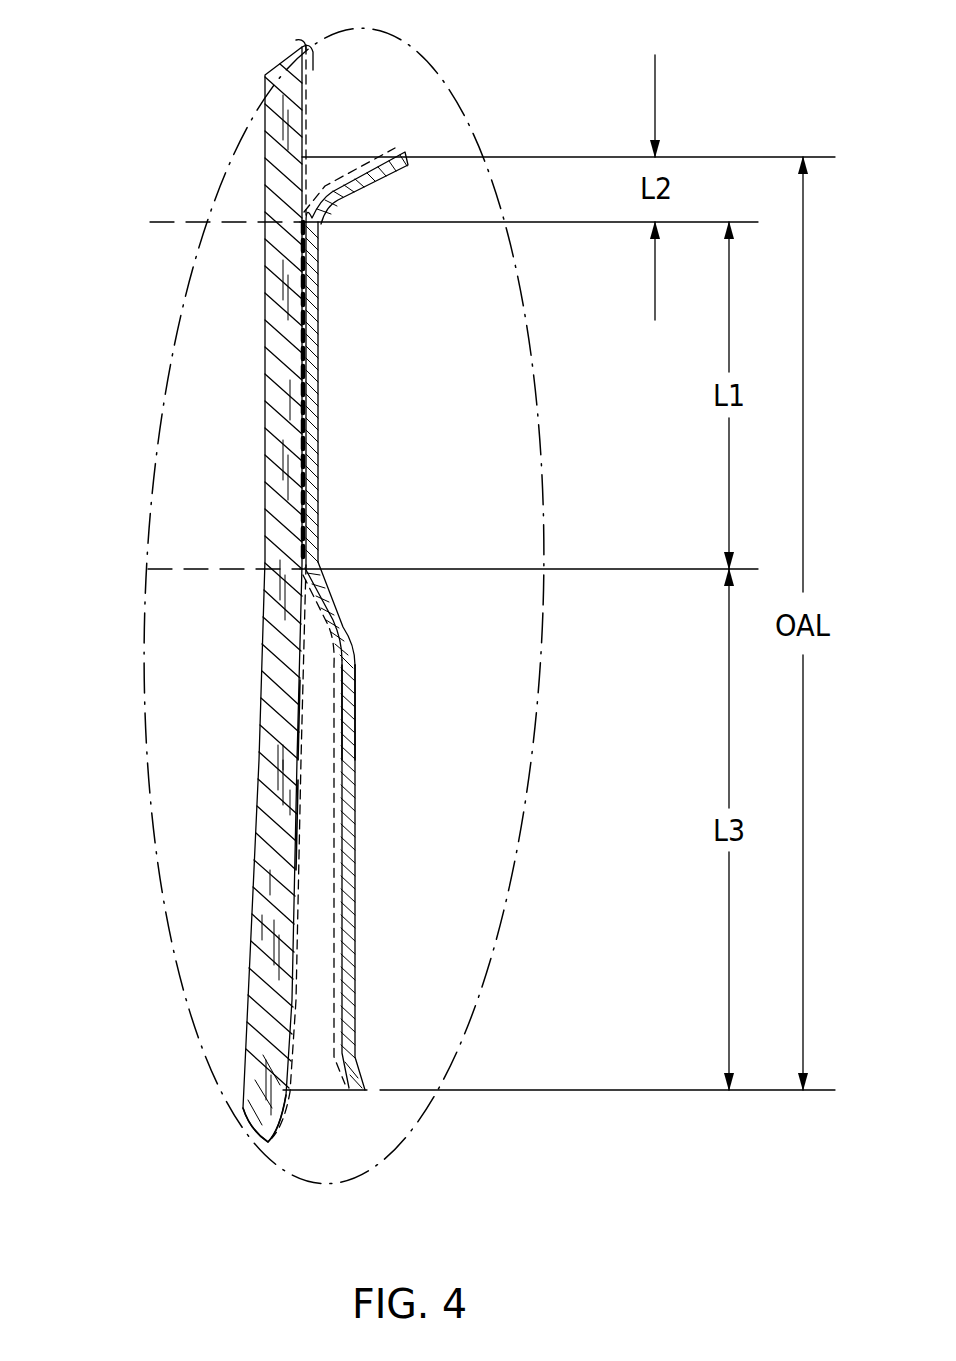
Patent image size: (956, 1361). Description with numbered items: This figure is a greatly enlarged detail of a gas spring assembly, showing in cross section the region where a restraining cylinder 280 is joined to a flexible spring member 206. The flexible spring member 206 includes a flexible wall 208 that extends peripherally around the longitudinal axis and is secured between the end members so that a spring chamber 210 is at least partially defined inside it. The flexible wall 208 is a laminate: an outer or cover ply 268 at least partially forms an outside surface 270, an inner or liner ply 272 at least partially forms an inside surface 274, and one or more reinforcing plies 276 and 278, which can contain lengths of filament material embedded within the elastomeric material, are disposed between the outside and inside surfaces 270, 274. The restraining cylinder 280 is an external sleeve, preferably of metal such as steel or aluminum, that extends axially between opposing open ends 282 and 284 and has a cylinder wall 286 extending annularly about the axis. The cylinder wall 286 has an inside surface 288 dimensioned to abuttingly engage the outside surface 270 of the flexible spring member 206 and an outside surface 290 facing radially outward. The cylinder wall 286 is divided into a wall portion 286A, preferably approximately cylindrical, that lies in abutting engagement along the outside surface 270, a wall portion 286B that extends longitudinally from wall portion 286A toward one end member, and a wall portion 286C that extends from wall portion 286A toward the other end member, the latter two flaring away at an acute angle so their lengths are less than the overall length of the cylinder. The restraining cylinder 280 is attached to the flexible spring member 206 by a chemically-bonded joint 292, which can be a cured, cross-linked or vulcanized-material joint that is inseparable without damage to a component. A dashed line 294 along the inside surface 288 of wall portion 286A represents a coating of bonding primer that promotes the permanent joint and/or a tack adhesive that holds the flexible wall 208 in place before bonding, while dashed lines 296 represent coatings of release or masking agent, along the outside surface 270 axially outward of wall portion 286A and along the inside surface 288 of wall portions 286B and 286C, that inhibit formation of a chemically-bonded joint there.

The flexible spring member 206 is at (263, 192).
The flexible wall 208 is at (266, 1003).
The spring chamber 210 is at (212, 637).
The outer or cover ply 268 is at (300, 767).
The outside surface 270 is at (300, 867).
The inner or liner ply 272 is at (258, 878).
The inside surface 274 is at (253, 921).
The reinforcing ply 276 is at (300, 758).
The reinforcing ply 278 is at (297, 797).
The restraining cylinder 280 is at (349, 609).
The open end 282 is at (338, 112).
The open end 284 is at (318, 1112).
The cylinder wall 286 is at (413, 621).
The wall portion 286A is at (313, 345).
The wall portion 286B is at (357, 187).
The wall portion 286C is at (348, 817).
The inside surface 288 is at (353, 690).
The outside surface 290 is at (346, 704).
The chemically-bonded joint 292 is at (309, 370).
The dashed line 294 is at (303, 393).
The dashed lines 296 is at (296, 53).